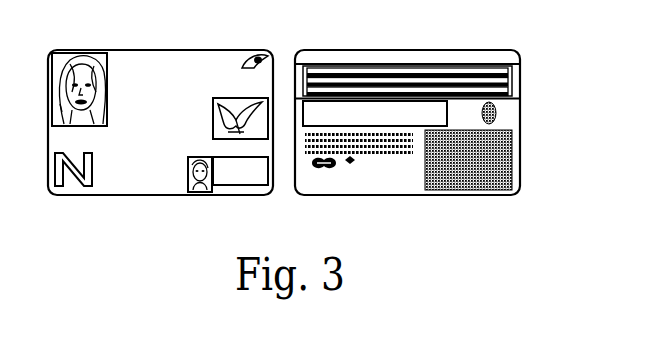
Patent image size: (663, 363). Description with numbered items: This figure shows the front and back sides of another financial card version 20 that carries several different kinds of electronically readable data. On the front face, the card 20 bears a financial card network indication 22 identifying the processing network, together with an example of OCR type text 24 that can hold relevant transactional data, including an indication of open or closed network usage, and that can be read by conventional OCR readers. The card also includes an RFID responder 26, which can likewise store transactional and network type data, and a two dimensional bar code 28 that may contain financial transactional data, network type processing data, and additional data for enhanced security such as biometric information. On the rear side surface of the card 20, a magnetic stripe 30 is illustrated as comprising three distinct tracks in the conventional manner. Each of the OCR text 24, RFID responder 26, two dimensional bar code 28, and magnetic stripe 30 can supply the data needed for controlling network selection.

The financial card 20 is at (55, 50).
The financial card network indication 22 is at (243, 195).
The OCR type text 24 is at (127, 195).
The RFID responder 26 is at (405, 188).
The two dimensional bar code 28 is at (475, 190).
The magnetic stripe 30 is at (520, 101).